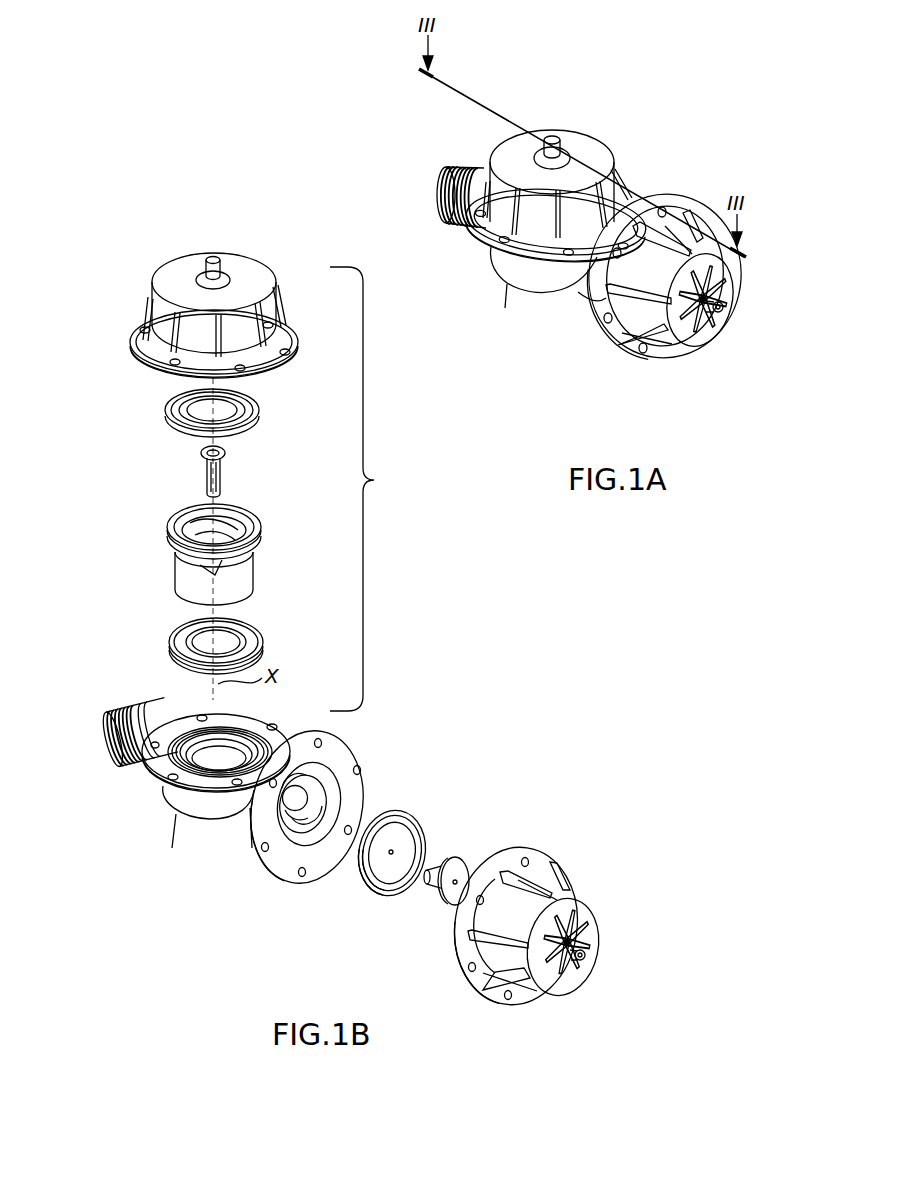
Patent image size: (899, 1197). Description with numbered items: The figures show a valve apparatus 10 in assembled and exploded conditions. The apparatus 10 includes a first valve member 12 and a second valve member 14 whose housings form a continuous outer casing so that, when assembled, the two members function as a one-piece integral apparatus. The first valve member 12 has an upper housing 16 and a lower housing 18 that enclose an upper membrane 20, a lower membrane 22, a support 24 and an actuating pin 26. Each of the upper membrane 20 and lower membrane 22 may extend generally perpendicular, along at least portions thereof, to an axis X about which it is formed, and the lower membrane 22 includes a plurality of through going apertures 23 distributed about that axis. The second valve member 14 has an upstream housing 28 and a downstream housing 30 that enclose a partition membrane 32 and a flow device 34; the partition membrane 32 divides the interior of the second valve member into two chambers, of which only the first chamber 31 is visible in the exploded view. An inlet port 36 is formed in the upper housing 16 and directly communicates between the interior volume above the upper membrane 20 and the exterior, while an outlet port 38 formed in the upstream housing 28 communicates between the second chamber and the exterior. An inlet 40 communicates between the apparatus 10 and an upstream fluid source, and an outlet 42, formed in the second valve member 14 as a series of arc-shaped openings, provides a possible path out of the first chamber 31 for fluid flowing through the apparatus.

In FIG. 1A, the valve apparatus 10 is at (655, 115).
In FIG. 1B, the valve apparatus 10 is at (441, 611).
In FIG. 1A, the first valve member 12 is at (572, 125).
In FIG. 1B, the first valve member 12 is at (371, 489).
In FIG. 1A, the second valve member 14 is at (690, 190).
In FIG. 1B, the second valve member 14 is at (546, 838).
In FIG. 1A, the upper housing 16 is at (500, 160).
In FIG. 1B, the upper housing 16 is at (248, 262).
In FIG. 1A, the lower housing 18 is at (522, 274).
In FIG. 1B, the lower housing 18 is at (188, 805).
In FIG. 1B, the upper membrane 20 is at (165, 407).
In FIG. 1B, the lower membrane 22 is at (170, 640).
In FIG. 1B, the through going apertures 23 is at (236, 628).
In FIG. 1B, the support 24 is at (180, 558).
In FIG. 1B, the actuating pin 26 is at (200, 468).
In FIG. 1A, the upstream housing 28 is at (686, 335).
In FIG. 1B, the upstream housing 28 is at (552, 855).
In FIG. 1A, the downstream housing 30 is at (588, 305).
In FIG. 1B, the downstream housing 30 is at (256, 848).
In FIG. 1B, the first chamber 31 is at (322, 805).
In FIG. 1B, the partition membrane 32 is at (375, 896).
In FIG. 1B, the flow device 34 is at (445, 906).
In FIG. 1A, the inlet port 36 is at (548, 140).
In FIG. 1B, the inlet port 36 is at (208, 258).
In FIG. 1A, the outlet port 38 is at (722, 318).
In FIG. 1B, the outlet port 38 is at (594, 950).
In FIG. 1A, the inlet 40 is at (437, 180).
In FIG. 1B, the inlet 40 is at (110, 718).
In FIG. 1B, the outlet 42 is at (318, 832).